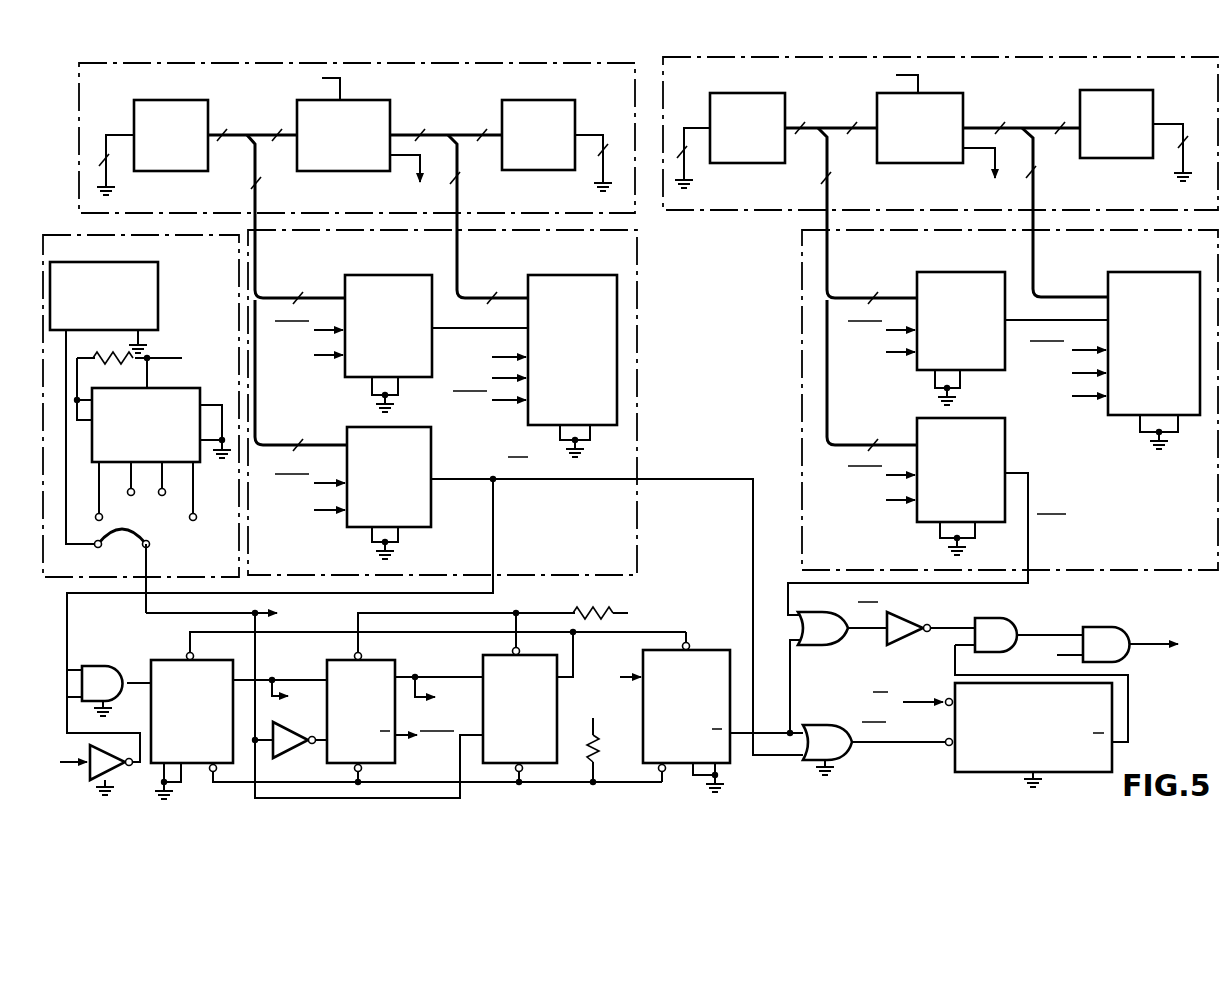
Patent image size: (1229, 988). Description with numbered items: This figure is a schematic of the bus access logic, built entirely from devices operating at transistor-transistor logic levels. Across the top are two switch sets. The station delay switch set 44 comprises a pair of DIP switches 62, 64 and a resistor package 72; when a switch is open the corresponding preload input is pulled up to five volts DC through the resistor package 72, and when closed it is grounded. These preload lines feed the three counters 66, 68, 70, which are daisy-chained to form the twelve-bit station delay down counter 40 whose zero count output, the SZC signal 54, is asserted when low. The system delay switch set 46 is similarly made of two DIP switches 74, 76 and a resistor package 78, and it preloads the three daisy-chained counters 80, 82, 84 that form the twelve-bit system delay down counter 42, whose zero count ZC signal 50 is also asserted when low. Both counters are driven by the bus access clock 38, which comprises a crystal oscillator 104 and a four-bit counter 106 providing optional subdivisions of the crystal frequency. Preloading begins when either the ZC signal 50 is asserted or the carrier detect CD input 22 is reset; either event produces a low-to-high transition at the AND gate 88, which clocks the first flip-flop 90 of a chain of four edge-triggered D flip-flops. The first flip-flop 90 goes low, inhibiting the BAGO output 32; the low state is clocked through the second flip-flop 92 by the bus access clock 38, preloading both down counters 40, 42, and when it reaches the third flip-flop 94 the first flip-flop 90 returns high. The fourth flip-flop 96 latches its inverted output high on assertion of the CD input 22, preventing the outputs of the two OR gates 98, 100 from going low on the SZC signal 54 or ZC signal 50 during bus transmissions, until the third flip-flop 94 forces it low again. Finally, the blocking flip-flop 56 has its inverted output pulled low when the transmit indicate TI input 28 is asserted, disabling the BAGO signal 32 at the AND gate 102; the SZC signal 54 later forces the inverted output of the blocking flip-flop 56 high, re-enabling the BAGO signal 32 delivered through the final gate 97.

The system delay switch set 46 is at (79, 62).
The DIP switch 76 is at (169, 99).
The resistor package 78 is at (365, 100).
The DIP switch 74 is at (546, 100).
The station delay switch set 44 is at (667, 57).
The DIP switch 64 is at (718, 90).
The resistor package 72 is at (945, 94).
The DIP switch 62 is at (1125, 90).
The bus access clock 38 is at (72, 235).
The crystal oscillator 104 is at (163, 262).
The four-bit counter 106 is at (125, 386).
The system delay down counter 42 is at (637, 259).
The counter 82 is at (397, 275).
The counter 80 is at (575, 275).
The counter 84 is at (320, 427).
The zero count (ZC) signal 50 is at (592, 479).
The station delay down counter 40 is at (802, 265).
The counter 68 is at (964, 272).
The counter 66 is at (1154, 272).
The counter 70 is at (922, 418).
The zero count (SZC) output signal 54 is at (1028, 505).
The AND gate 88 is at (79, 666).
The carrier detect (CD) input 22 is at (75, 777).
The first flip-flop 90 is at (174, 658).
The second flip-flop 92 is at (327, 658).
The third flip-flop 94 is at (488, 655).
The fourth flip-flop 96 is at (721, 650).
The OR gate 98 is at (830, 642).
The OR gate 100 is at (831, 722).
The transmit indicate (TI) input 28 is at (928, 708).
The blocking flip-flop 56 is at (955, 680).
The AND gate 102 is at (1008, 620).
The AND gate 97 is at (1099, 627).
The bus access go (BAGO) output 32 is at (1161, 640).